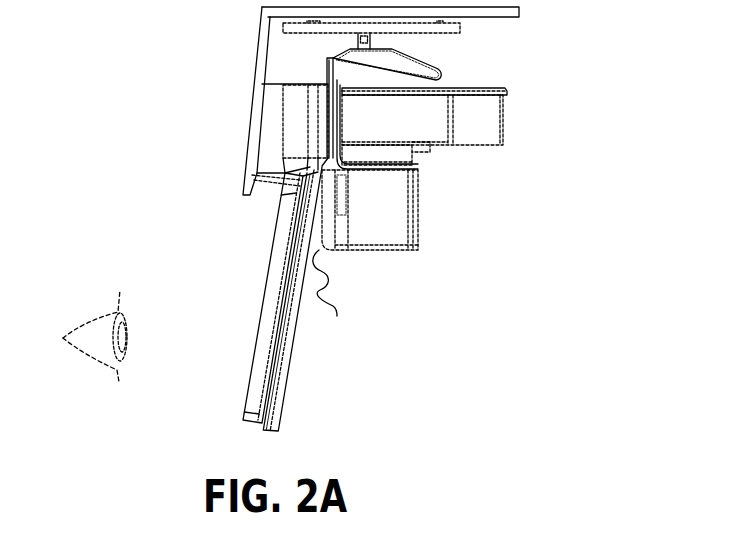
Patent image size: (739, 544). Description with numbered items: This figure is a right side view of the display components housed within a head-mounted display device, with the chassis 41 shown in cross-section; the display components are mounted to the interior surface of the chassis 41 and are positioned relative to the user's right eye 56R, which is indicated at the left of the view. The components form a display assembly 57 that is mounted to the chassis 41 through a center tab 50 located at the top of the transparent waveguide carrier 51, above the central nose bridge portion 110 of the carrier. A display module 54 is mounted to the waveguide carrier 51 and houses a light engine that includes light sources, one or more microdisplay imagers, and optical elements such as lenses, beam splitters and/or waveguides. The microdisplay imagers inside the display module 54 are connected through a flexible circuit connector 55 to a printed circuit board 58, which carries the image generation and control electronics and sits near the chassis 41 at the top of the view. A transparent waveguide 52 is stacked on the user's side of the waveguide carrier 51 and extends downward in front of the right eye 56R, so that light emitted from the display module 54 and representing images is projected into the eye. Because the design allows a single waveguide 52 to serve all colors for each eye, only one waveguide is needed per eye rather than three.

The chassis 41 is at (252, 116).
The printed circuit board 58 is at (300, 32).
The flexible circuit connector 55 is at (434, 80).
The center tab 50 is at (284, 147).
The display assembly 57 is at (543, 73).
The display module 54 is at (442, 199).
The central nose bridge portion 110 is at (343, 295).
The transparent waveguide 52 is at (255, 358).
The transparent waveguide carrier 51 is at (282, 402).
The right eye 56R is at (124, 324).